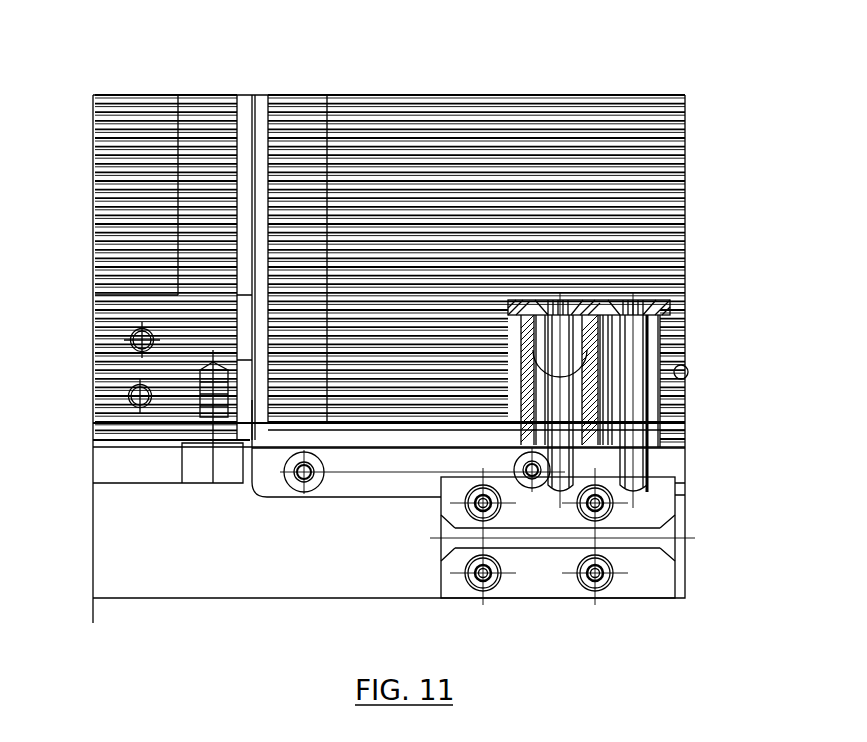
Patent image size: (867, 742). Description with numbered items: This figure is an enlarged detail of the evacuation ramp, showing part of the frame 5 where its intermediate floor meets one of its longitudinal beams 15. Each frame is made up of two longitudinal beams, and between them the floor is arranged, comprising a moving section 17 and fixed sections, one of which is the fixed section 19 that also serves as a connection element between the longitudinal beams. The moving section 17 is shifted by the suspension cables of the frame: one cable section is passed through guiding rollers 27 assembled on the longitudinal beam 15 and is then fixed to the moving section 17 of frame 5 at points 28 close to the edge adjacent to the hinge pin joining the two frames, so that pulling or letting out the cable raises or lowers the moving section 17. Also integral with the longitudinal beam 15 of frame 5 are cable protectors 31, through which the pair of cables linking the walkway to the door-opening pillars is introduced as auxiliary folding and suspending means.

The frame 5 is at (172, 618).
The longitudinal beam 15 is at (312, 540).
The moving section 17 is at (140, 133).
The fixed section 19 is at (410, 135).
The guiding rollers 27 is at (598, 345).
The points 28 is at (133, 390).
The cable protectors 31 is at (540, 578).